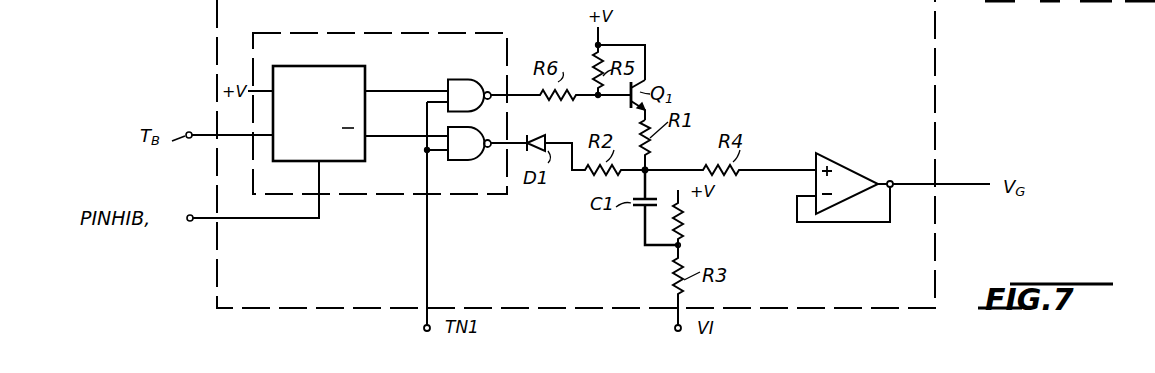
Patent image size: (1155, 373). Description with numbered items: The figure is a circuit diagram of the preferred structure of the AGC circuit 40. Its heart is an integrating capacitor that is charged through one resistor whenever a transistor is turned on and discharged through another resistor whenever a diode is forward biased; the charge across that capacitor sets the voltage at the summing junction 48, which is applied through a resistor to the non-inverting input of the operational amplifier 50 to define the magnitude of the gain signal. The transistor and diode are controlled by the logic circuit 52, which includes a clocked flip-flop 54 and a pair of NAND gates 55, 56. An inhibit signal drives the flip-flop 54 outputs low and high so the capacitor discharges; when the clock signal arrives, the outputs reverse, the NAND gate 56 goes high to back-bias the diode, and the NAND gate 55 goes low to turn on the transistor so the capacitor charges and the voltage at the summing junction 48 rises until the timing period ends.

The AGC circuit 40 is at (938, 84).
The summing junction 48 is at (648, 168).
The operational amplifier 50 is at (848, 168).
The logic circuit 52 is at (357, 194).
The clocked flip-flop 54 is at (341, 66).
The NAND gate 55 is at (478, 78).
The NAND gate 56 is at (459, 160).